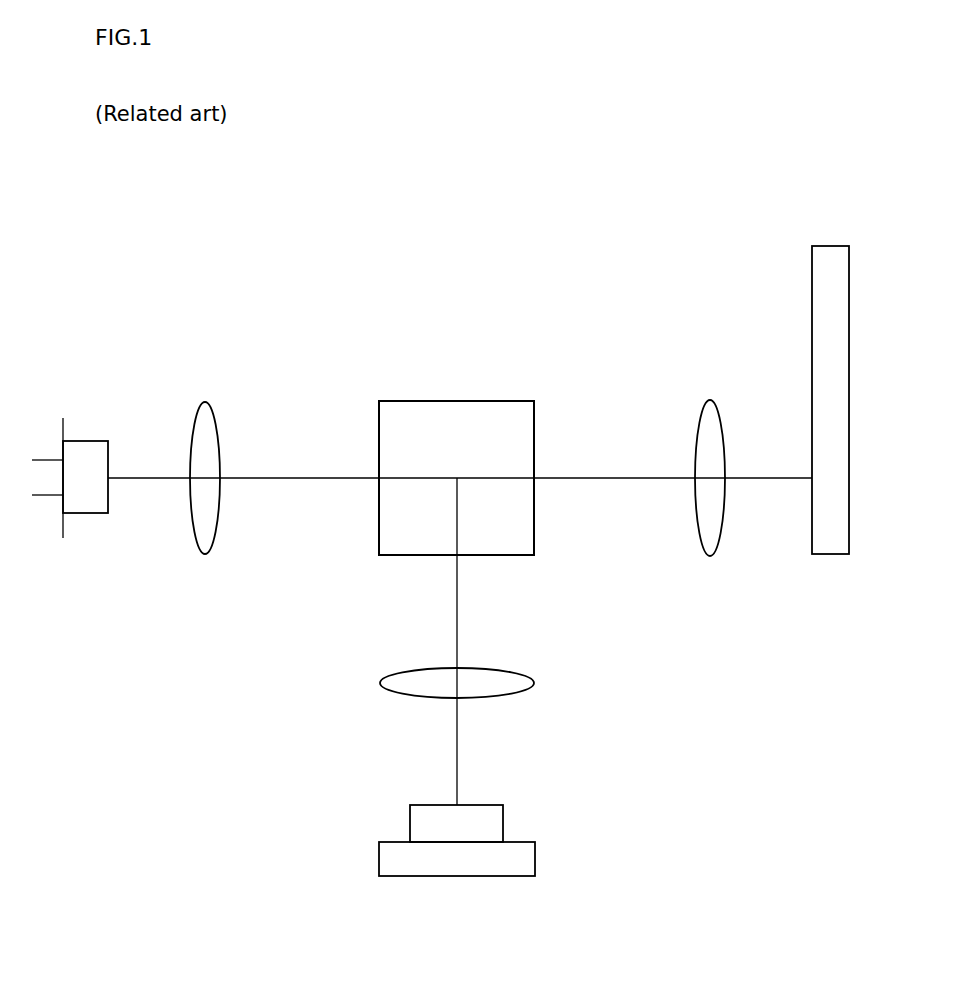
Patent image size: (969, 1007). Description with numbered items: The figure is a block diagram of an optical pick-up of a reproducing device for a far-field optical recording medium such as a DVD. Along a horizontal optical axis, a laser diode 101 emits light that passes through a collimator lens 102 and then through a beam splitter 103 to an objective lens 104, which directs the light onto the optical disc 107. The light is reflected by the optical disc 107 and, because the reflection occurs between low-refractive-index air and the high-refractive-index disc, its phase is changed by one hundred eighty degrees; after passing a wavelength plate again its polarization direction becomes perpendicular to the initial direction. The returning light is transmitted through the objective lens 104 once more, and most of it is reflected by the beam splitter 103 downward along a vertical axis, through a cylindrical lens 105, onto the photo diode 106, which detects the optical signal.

The laser diode 101 is at (90, 455).
The collimator lens 102 is at (210, 440).
The beam splitter 103 is at (465, 415).
The objective lens 104 is at (710, 410).
The cylindrical lens 105 is at (387, 683).
The photo diode 106 is at (387, 858).
The optical disc 107 is at (835, 258).